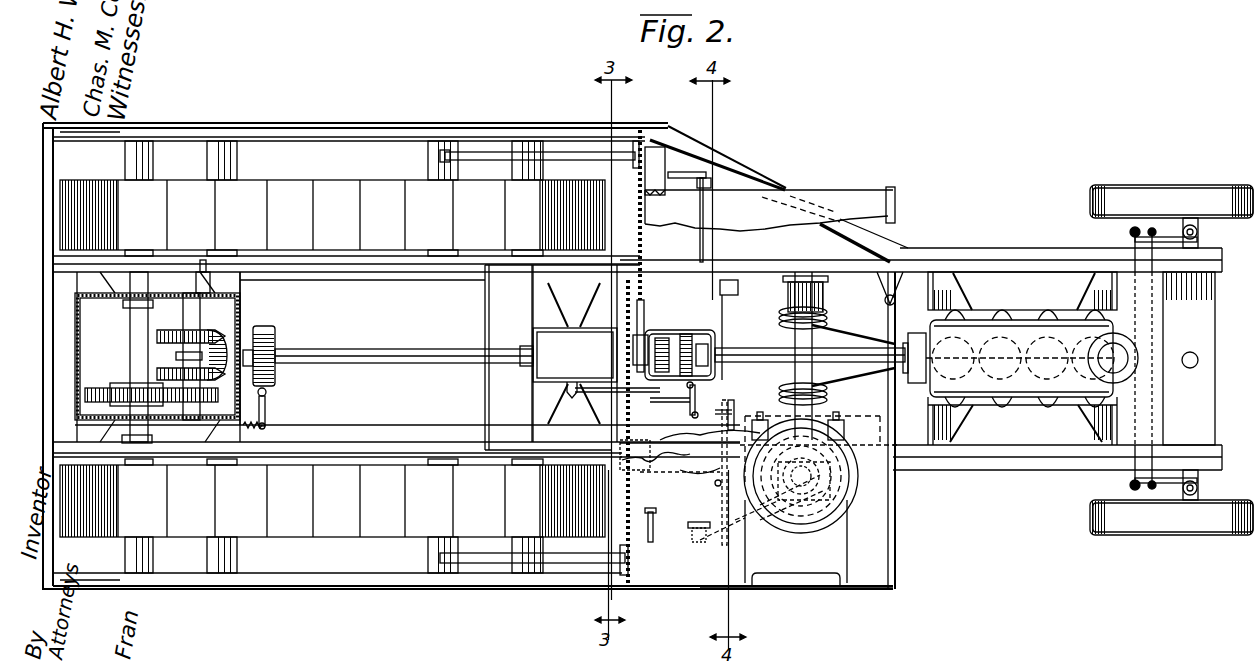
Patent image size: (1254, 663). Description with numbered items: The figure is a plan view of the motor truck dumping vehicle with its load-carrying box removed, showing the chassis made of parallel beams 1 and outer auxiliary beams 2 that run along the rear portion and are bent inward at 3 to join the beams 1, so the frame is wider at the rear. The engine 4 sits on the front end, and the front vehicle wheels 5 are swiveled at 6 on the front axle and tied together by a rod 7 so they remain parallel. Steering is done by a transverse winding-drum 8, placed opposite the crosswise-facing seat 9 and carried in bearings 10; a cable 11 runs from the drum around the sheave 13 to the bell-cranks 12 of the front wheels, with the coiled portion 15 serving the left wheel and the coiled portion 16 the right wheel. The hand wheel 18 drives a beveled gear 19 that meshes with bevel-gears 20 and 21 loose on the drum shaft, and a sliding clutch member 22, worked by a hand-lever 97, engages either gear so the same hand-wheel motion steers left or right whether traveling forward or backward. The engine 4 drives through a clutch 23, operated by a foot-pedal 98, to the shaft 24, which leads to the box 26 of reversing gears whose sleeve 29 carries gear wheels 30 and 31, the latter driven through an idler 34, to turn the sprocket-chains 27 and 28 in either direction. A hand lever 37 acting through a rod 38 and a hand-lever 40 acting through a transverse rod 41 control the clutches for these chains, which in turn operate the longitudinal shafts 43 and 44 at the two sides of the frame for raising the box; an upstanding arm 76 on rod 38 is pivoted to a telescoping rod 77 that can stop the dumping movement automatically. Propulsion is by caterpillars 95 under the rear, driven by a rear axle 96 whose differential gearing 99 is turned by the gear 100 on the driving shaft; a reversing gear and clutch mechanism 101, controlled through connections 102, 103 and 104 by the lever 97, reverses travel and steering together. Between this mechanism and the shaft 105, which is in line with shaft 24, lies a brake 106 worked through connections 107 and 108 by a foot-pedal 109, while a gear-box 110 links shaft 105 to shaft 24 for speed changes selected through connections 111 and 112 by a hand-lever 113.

The parallel beams 1 is at (990, 262).
The outer or auxiliary beams 2 is at (330, 137).
The inward bend 3 is at (752, 188).
The engine 4 is at (1024, 400).
The front vehicle wheels 5 is at (1168, 196).
The pivot 6 is at (1197, 232).
The rod 7 is at (1158, 425).
The transverse winding-drum 8 is at (820, 295).
The seat 9 is at (810, 579).
The bearings 10 is at (798, 277).
The cable 11 is at (848, 370).
The bell-cranks 12 is at (1130, 233).
The sheave 13 is at (1112, 380).
The coiled portion 15 is at (826, 312).
The coiled portion 16 is at (783, 388).
The hand wheel 18 is at (820, 520).
The beveled gear 19 is at (838, 500).
The bevel-gear 20 is at (822, 430).
The bevel-gear 21 is at (800, 530).
The sliding clutch member 22 is at (775, 530).
The clutch 23 is at (912, 385).
The shaft 24 is at (810, 345).
The box 26 is at (715, 334).
The sprocket-chain 27 is at (650, 460).
The sprocket-chain 28 is at (640, 222).
The sleeve 29 is at (612, 346).
The gear wheel 30 is at (672, 318).
The gear wheel 31 is at (686, 333).
The idler 34 is at (662, 336).
The hand lever 37 is at (700, 530).
The rod 38 is at (700, 246).
The hand-lever 40 is at (648, 515).
The transverse rod 41 is at (660, 475).
The longitudinal shaft 43 is at (485, 565).
The longitudinal shaft 44 is at (490, 152).
The upstanding arm 76 is at (710, 178).
The longitudinally disposed rod 77 is at (683, 170).
The caterpillars 95 is at (302, 190).
The rear axle 96 is at (148, 432).
The hand-lever 97 is at (740, 520).
The foot-pedal 98 is at (850, 428).
The differential gearing 99 is at (105, 385).
The gear 100 is at (265, 412).
The reversing gear and clutch mechanism 101 is at (228, 350).
The connection 102 is at (195, 269).
The connection 103 is at (462, 280).
The connection 104 is at (735, 291).
The shaft 105 is at (415, 364).
The brake 106 is at (275, 374).
The connection 107 is at (267, 392).
The connection 108 is at (430, 404).
The foot-pedal 109 is at (744, 413).
The gear-box 110 is at (540, 338).
The connection 111 is at (600, 395).
The connection 112 is at (678, 390).
The hand-lever 113 is at (714, 484).